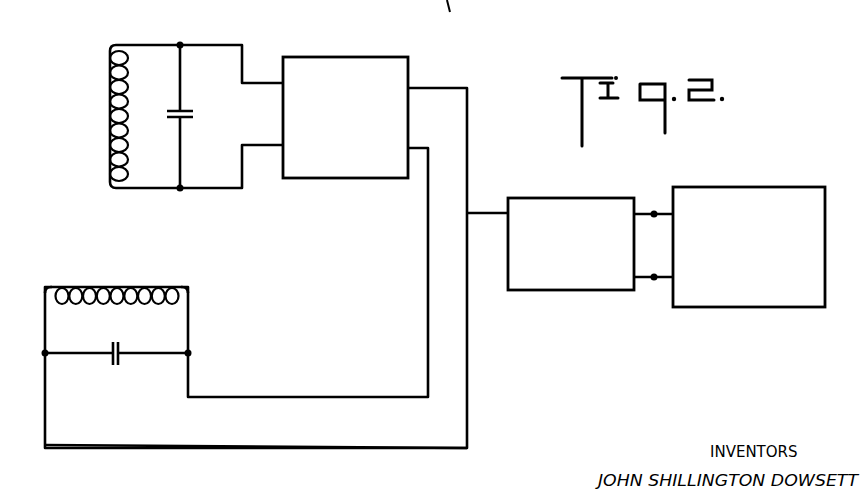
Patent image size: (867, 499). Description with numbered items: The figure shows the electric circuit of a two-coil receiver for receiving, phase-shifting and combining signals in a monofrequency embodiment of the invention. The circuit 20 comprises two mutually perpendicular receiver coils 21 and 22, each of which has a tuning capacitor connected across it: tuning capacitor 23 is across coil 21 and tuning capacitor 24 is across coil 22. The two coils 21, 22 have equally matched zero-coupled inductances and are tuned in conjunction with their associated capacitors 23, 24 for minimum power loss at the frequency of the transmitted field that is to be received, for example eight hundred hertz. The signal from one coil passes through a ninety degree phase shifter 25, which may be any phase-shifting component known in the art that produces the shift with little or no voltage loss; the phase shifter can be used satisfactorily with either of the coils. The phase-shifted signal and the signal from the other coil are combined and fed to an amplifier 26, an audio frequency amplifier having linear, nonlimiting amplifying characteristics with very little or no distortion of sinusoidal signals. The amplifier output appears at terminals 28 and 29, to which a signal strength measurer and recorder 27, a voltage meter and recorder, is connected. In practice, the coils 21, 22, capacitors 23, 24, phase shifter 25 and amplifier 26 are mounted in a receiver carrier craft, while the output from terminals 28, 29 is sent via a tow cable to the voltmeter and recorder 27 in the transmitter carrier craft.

The circuit 20 is at (312, 448).
The coil 21 is at (163, 285).
The coil 22 is at (107, 68).
The tuning capacitor 23 is at (110, 367).
The tuning capacitor 24 is at (182, 110).
The 90° phase shifter 25 is at (388, 55).
The amplifier 26 is at (568, 197).
The signal strength measurer and recorder 27 is at (800, 185).
The amplifier output terminal 28 is at (655, 212).
The amplifier output terminal 29 is at (654, 280).